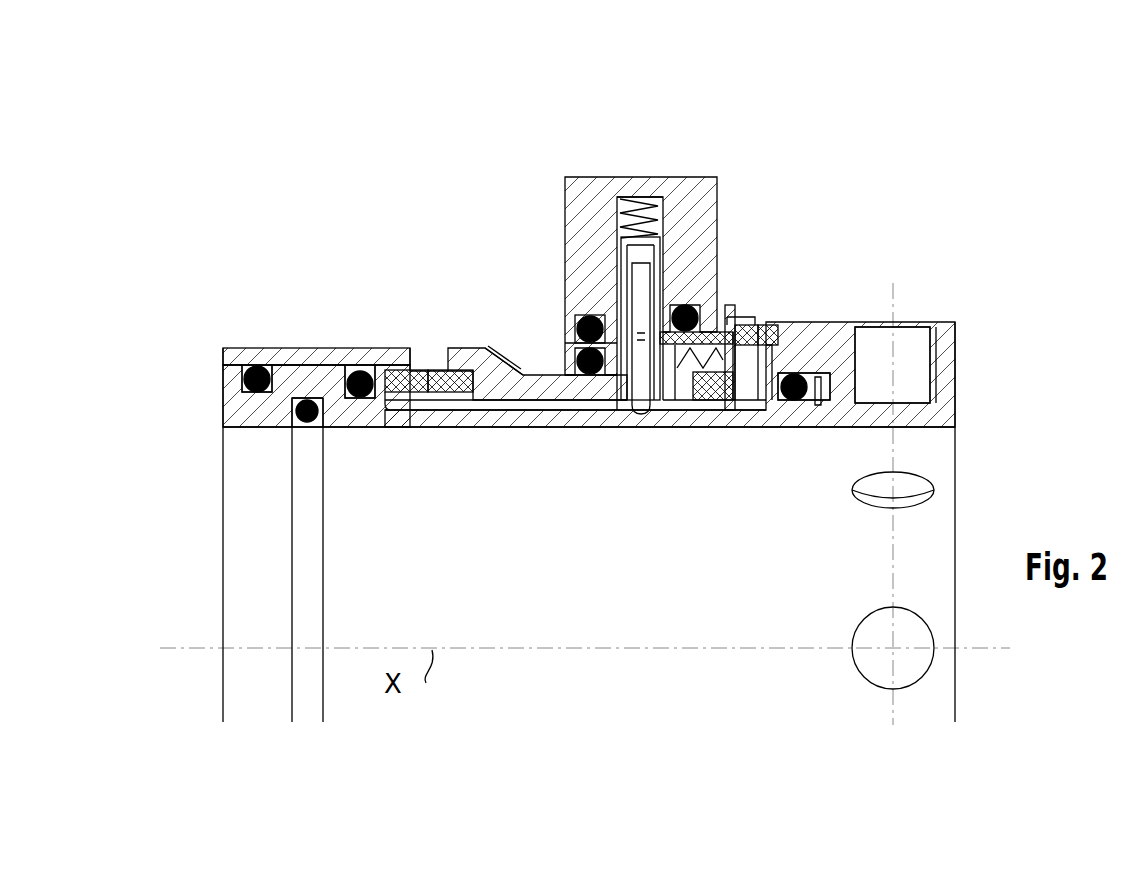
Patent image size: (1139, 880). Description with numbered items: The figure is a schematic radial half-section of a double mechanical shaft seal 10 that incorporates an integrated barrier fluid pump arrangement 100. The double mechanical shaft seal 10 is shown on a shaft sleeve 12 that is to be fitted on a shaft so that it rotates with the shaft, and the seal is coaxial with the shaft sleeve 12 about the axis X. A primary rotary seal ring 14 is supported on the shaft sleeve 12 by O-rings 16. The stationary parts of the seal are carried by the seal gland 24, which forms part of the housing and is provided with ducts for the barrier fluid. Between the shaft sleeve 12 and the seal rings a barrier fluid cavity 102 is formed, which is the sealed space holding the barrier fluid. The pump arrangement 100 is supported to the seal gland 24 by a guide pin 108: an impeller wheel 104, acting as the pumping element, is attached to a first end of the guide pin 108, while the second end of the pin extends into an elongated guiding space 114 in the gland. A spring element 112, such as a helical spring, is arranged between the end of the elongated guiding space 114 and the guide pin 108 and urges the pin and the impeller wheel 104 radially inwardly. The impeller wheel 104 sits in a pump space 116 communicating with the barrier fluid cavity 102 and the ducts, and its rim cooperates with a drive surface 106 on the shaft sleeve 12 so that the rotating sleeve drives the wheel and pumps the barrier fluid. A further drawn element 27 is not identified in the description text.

The double mechanical shaft seal 10 is at (391, 232).
The shaft sleeve 12 is at (270, 405).
The primary rotary seal ring 14 is at (250, 347).
The O-rings 16 is at (347, 347).
The seal gland 24 is at (577, 212).
The flange / bearing surface 27 is at (557, 352).
The pump arrangement 100 is at (596, 152).
The barrier fluid cavity 102 is at (492, 348).
The impeller wheel 104 is at (620, 410).
The drive surface 106 is at (643, 417).
The guide pin 108 is at (667, 245).
The spring element 112 is at (648, 198).
The elongated guiding space 114 is at (653, 217).
The pump space 116 is at (657, 350).